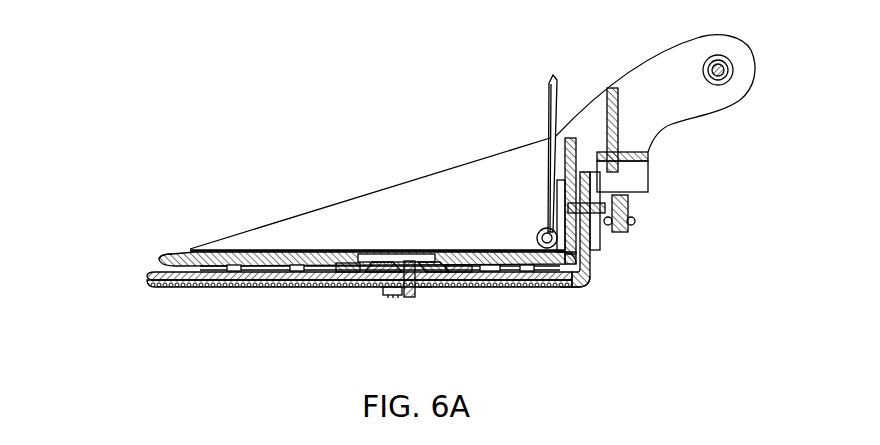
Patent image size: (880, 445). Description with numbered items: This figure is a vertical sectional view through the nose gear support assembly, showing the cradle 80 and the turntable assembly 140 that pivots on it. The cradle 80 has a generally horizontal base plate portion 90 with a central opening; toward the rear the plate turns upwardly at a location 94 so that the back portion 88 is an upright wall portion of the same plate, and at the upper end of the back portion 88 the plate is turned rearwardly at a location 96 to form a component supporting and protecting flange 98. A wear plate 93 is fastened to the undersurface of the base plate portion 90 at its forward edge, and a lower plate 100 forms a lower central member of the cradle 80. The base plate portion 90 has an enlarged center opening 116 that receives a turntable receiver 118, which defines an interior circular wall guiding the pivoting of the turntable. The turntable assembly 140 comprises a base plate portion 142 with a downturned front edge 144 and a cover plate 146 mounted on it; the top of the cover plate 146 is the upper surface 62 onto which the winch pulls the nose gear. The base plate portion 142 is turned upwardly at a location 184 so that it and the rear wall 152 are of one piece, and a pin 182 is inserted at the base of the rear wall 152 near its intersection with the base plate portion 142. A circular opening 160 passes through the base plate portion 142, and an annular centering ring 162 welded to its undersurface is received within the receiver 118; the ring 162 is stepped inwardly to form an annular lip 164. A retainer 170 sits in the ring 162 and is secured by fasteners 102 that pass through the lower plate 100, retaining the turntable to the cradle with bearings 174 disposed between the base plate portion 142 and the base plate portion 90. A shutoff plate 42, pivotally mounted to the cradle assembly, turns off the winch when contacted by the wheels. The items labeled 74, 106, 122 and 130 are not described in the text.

The shutoff plate 42 is at (548, 98).
The upper surface 62 is at (433, 266).
The pivot bolt 74 is at (720, 62).
The cradle 80 is at (359, 307).
The back portion 88 is at (591, 250).
The base plate portion 90 is at (490, 288).
The wear plate 93 is at (172, 289).
The location 94 is at (590, 280).
The location 96 is at (604, 156).
The flange 98 is at (649, 157).
The lower plate 100 is at (331, 288).
The fasteners 102 is at (393, 291).
The arm 106 is at (665, 50).
The center opening 116 is at (355, 266).
The turntable receiver 118 is at (462, 265).
The bracket 122 is at (602, 206).
The nut 130 is at (627, 224).
The turntable assembly 140 is at (332, 224).
The base plate portion 142 is at (300, 252).
The downturned front edge 144 is at (158, 258).
The cover plate 146 is at (504, 252).
The rear wall 152 is at (570, 136).
The circular opening 160 is at (395, 258).
The ring 162 is at (442, 283).
The annular lip 164 is at (425, 288).
The retainer 170 is at (362, 281).
The bearings 174 is at (266, 286).
The pin 182 is at (544, 229).
The location 184 is at (568, 288).